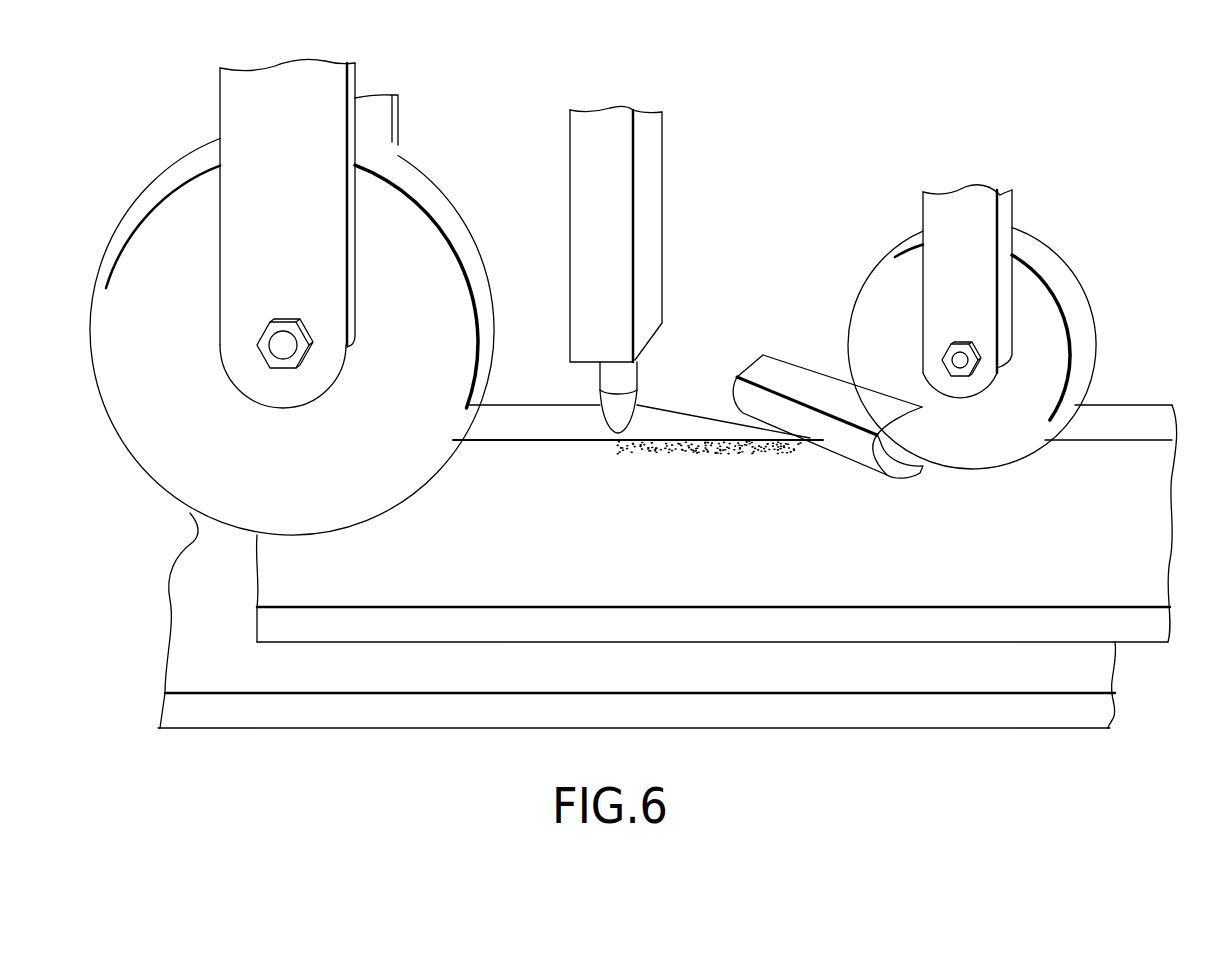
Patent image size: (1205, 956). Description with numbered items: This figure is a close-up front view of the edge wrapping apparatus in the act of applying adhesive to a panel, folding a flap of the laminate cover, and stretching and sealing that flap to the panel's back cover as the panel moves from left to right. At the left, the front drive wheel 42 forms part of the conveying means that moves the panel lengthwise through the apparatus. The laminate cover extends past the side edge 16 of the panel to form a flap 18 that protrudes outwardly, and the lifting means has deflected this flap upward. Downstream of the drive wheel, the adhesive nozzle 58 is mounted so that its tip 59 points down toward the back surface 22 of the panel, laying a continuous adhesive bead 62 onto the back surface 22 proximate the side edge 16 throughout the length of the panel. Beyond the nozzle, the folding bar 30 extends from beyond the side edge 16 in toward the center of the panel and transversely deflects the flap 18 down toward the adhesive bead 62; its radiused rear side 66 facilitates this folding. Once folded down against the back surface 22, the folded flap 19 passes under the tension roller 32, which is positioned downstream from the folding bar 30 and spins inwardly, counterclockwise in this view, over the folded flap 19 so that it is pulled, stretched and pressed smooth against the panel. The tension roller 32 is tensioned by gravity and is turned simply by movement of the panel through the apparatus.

The front drive wheel 42 is at (115, 290).
The tension roller 32 is at (1048, 247).
The nozzle 58 is at (652, 130).
The tip of the nozzle 59 is at (620, 413).
The adhesive bead 62 is at (683, 448).
The folding bar 30 is at (828, 410).
The radiused rear side 66 is at (867, 460).
The flap 18 is at (532, 415).
The side edge 16 is at (572, 443).
The folded flap 19 is at (1140, 417).
The back surface 22 is at (655, 533).